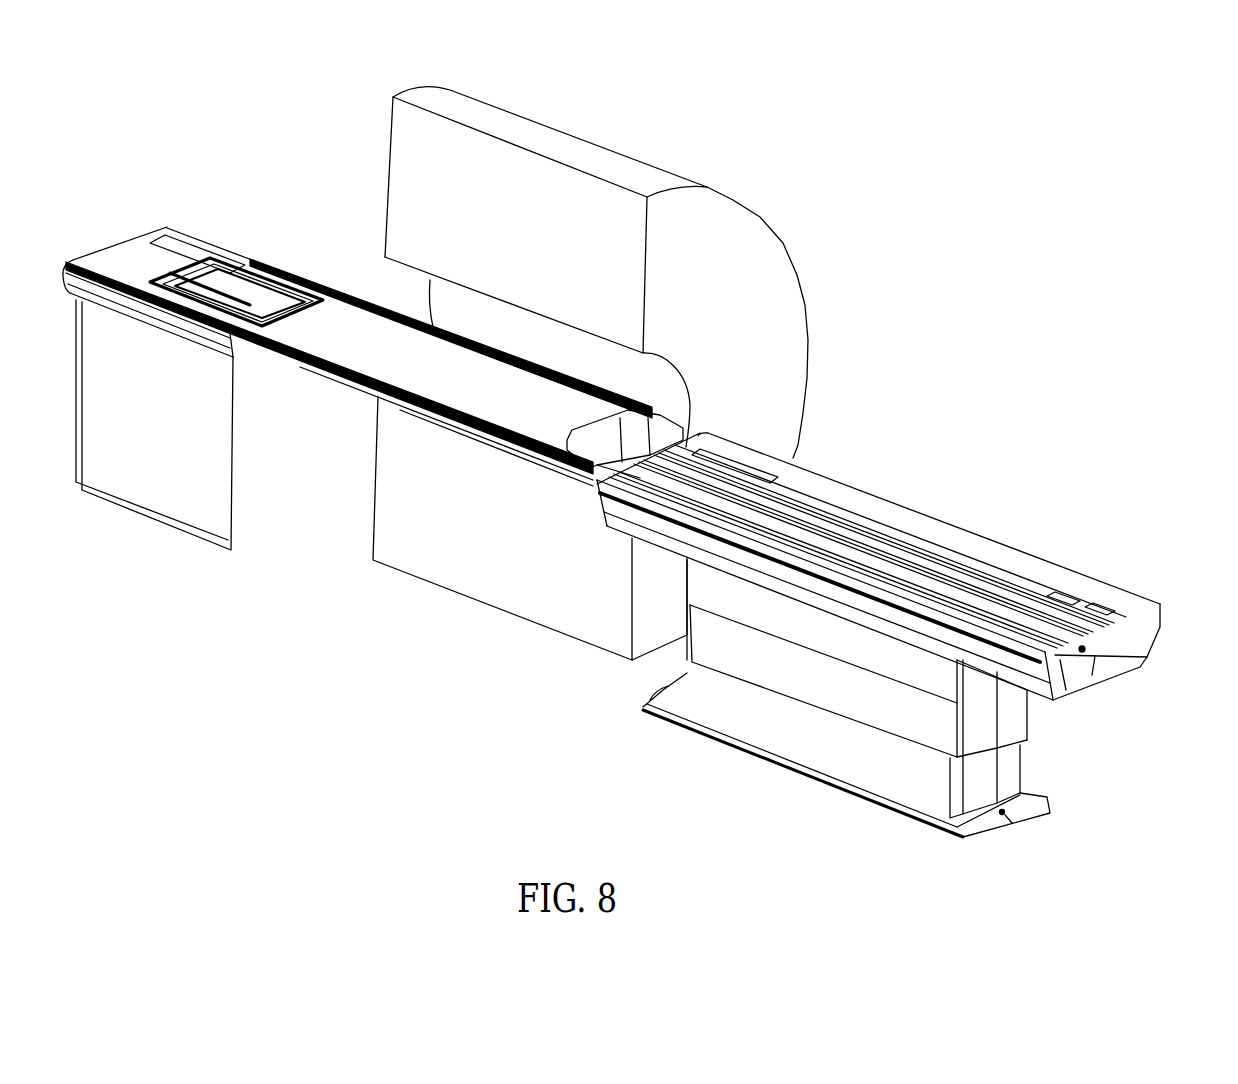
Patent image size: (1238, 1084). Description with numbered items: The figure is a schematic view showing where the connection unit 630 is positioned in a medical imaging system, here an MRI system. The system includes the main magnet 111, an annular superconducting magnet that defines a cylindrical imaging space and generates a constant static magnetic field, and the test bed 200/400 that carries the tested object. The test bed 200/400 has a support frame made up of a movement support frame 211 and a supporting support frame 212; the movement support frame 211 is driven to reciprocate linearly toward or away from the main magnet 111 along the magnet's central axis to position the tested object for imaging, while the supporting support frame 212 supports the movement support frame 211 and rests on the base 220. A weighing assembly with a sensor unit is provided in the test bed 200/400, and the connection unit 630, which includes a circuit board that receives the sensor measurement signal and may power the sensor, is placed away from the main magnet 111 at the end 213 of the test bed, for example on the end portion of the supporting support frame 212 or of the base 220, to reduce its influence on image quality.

The main magnet 111 is at (755, 367).
The test bed 200 is at (620, 465).
The test bed 400 is at (620, 465).
The movement support frame 211 is at (347, 313).
The supporting support frame 212 is at (965, 545).
The end of the test bed 213 is at (1107, 550).
The base 220 is at (927, 770).
The connection unit 630 is at (1100, 670).